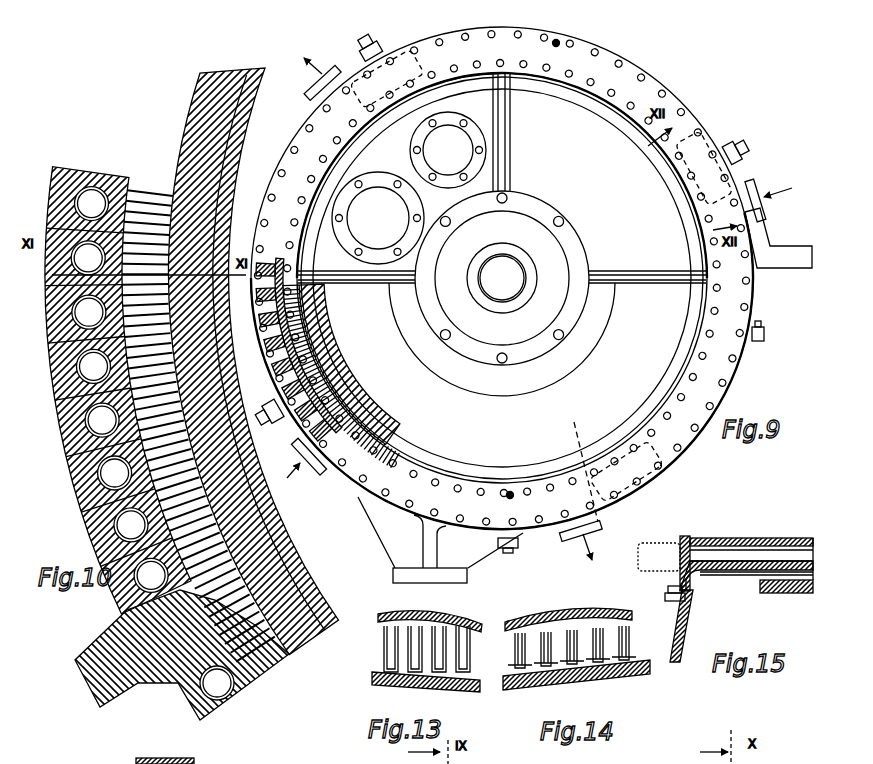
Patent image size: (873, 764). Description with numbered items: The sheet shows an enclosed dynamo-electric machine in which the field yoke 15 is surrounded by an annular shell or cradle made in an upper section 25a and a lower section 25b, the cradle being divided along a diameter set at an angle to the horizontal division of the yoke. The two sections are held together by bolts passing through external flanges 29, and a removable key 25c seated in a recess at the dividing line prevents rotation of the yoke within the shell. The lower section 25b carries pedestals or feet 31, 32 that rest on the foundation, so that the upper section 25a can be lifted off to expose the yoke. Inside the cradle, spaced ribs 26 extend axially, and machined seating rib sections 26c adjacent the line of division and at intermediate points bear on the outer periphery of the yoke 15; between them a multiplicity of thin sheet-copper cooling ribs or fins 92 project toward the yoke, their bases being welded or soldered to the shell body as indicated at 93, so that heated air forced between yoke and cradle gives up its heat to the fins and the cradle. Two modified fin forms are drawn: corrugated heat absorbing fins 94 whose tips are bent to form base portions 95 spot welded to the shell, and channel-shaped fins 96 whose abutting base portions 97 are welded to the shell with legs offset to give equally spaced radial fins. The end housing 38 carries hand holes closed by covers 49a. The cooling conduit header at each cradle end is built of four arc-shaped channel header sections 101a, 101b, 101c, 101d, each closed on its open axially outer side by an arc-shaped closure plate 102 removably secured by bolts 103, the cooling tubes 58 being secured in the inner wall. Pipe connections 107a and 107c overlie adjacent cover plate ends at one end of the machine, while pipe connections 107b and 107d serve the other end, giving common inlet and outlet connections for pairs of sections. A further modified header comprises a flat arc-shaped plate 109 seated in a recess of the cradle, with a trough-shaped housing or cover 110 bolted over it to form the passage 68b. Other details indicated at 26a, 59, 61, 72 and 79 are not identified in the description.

In FIG. 9, the field yoke 15 is at (316, 312).
In FIG. 10, the field yoke 15 is at (185, 128).
In FIG. 13, the field yoke 15 is at (452, 616).
In FIG. 14, the field yoke 15 is at (562, 614).
In FIG. 9, the upper section of the cradle 25a is at (280, 260).
In FIG. 10, the upper section of the cradle 25a is at (135, 608).
In FIG. 13, the upper section of the cradle 25a is at (452, 686).
In FIG. 14, the upper section of the cradle 25a is at (632, 684).
In FIG. 15, the upper section of the cradle 25a is at (730, 572).
In FIG. 9, the lower section of the cradle 25b is at (300, 440).
In FIG. 10, the lower section of the cradle 25b is at (168, 688).
In FIG. 9, the key 25c is at (345, 350).
In FIG. 10, the key 25c is at (310, 552).
In FIG. 9, the spaced ribs 26 is at (330, 378).
In FIG. 10, the spaced ribs 26 is at (55, 345).
In FIG. 9, the bearing block flange 26a is at (296, 396).
In FIG. 10, the bearing block flange 26a is at (56, 362).
In FIG. 9, the seating rib sections 26c is at (330, 330).
In FIG. 10, the seating rib sections 26c is at (58, 300).
In FIG. 15, the seating rib sections 26c is at (762, 578).
In FIG. 9, the external flanges 29 is at (724, 140).
In FIG. 10, the external flanges 29 is at (92, 690).
In FIG. 9, the pedestal or foot 31 is at (786, 270).
In FIG. 9, the pedestal or foot 32 is at (468, 575).
In FIG. 9, the end housing 38 is at (502, 234).
In FIG. 15, the end housing 38 is at (683, 630).
In FIG. 9, the covers 49a is at (420, 158).
In FIG. 10, the cooling tubes 58 is at (88, 485).
In FIG. 15, the cooling tubes 58 is at (792, 552).
In FIG. 10, the roller tube 59 is at (82, 470).
In FIG. 14, the roller tube 59 is at (609, 755).
In FIG. 15, the roller tube 59 is at (760, 547).
In FIG. 10, the roller shaft 61 is at (68, 420).
In FIG. 14, the roller shaft 61 is at (549, 755).
In FIG. 15, the roller shaft 61 is at (718, 540).
In FIG. 15, the conduit or passage 68b is at (660, 548).
In FIG. 10, the plate 72 is at (250, 763).
In FIG. 15, the spacer block 79 is at (778, 594).
In FIG. 9, the cooling ribs or fins 92 is at (300, 312).
In FIG. 10, the cooling ribs or fins 92 is at (158, 195).
In FIG. 15, the cooling ribs or fins 92 is at (802, 594).
In FIG. 10, the secured fin bases 93 is at (245, 683).
In FIG. 13, the heat absorbing fins 94 is at (383, 640).
In FIG. 13, the base portions 95 is at (382, 680).
In FIG. 14, the heat absorbing ribs or fins 96 is at (515, 650).
In FIG. 14, the base portions 97 is at (530, 688).
In FIG. 9, the header section 101a is at (628, 70).
In FIG. 10, the header section 101a is at (214, 763).
In FIG. 9, the header section 101b is at (735, 372).
In FIG. 9, the header section 101c is at (540, 512).
In FIG. 9, the header section 101d is at (302, 140).
In FIG. 9, the closure plate 102 is at (556, 40).
In FIG. 9, the bolts 103 is at (566, 50).
In FIG. 9, the pipe connection 107a is at (730, 148).
In FIG. 9, the pipe connection 107b is at (635, 490).
In FIG. 9, the pipe connection 107c is at (303, 474).
In FIG. 9, the pipe connection 107d is at (362, 52).
In FIG. 15, the flat arc-shaped plate 109 is at (686, 535).
In FIG. 15, the trough-shaped housing or cover 110 is at (648, 572).